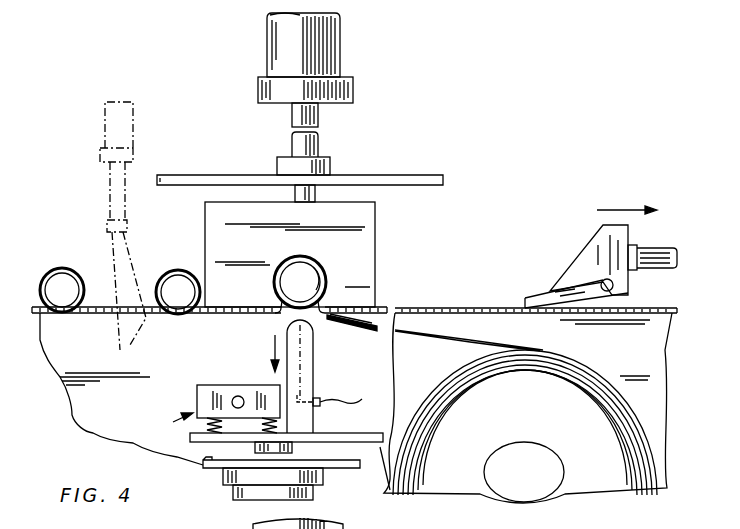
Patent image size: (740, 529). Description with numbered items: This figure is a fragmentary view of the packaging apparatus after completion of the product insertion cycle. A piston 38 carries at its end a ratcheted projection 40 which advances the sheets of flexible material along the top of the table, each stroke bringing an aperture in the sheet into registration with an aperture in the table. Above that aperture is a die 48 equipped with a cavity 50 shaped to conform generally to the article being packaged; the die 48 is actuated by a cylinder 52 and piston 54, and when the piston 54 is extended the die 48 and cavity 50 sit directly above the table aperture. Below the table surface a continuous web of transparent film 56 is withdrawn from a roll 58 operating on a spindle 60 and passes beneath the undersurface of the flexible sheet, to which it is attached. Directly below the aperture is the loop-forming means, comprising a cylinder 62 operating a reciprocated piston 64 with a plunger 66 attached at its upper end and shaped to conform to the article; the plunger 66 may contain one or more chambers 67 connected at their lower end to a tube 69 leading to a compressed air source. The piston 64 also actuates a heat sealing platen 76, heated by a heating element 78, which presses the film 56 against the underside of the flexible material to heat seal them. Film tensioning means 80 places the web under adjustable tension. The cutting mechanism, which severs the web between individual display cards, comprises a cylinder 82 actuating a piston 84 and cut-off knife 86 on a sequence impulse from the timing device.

The piston 38 is at (661, 253).
The ratcheted projection 40 is at (594, 257).
The die 48 is at (369, 214).
The cavity 50 is at (326, 284).
The cylinder 52 is at (341, 55).
The piston 54 is at (318, 118).
The transparent film 56 is at (177, 271).
The roll 58 is at (596, 362).
The spindle 60 is at (552, 470).
The cylinder 62 is at (313, 495).
The piston 64 is at (292, 448).
The plunger 66 is at (314, 411).
The chamber 67 is at (302, 364).
The tube 69 is at (365, 397).
The heat sealing platen 76 is at (211, 385).
The heating element 78 is at (172, 423).
The film tensioning means 80 is at (343, 321).
The cylinder 82 is at (107, 122).
The piston 84 is at (110, 190).
The cut-off knife 86 is at (112, 247).